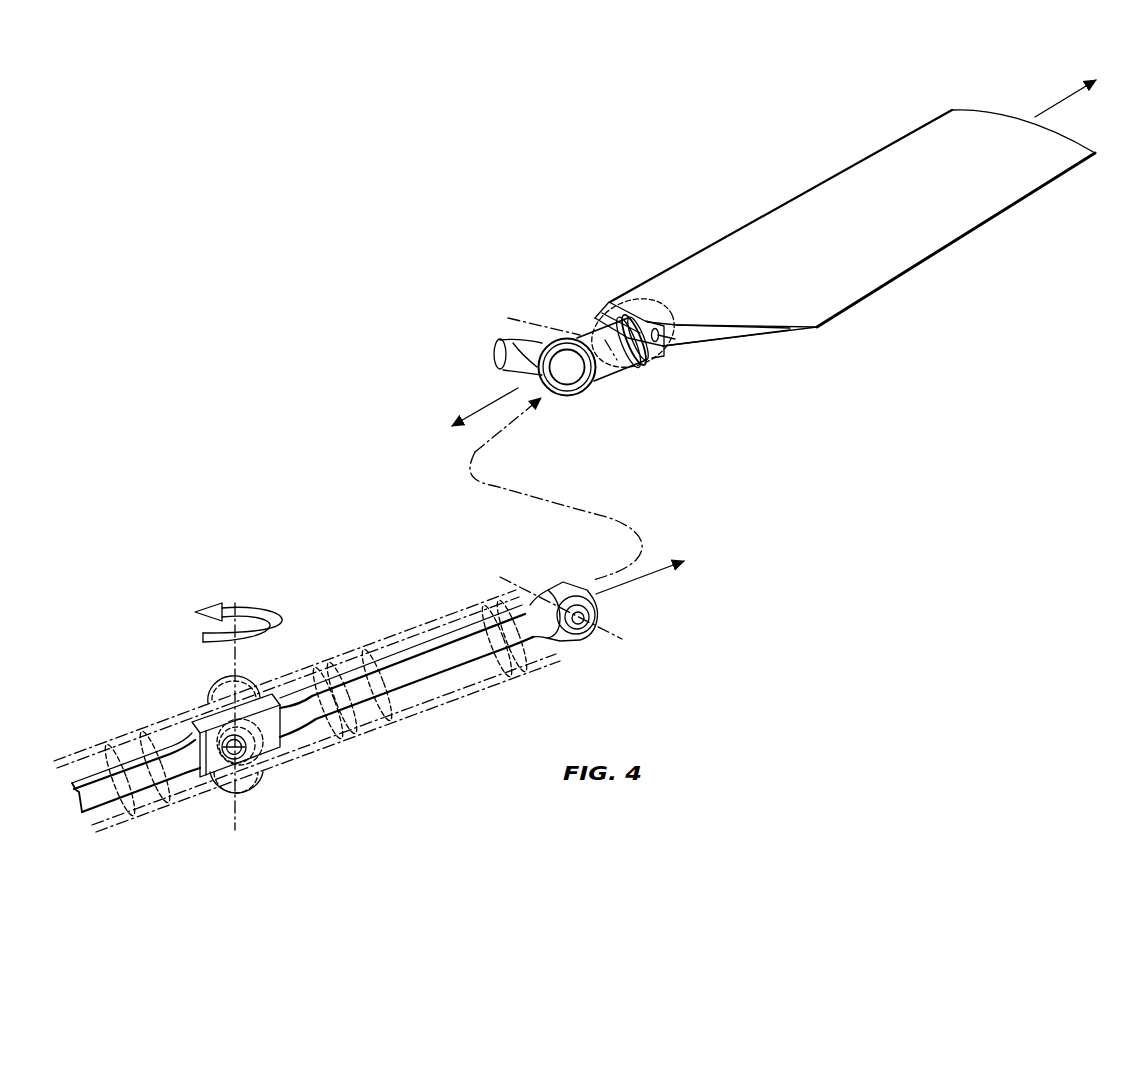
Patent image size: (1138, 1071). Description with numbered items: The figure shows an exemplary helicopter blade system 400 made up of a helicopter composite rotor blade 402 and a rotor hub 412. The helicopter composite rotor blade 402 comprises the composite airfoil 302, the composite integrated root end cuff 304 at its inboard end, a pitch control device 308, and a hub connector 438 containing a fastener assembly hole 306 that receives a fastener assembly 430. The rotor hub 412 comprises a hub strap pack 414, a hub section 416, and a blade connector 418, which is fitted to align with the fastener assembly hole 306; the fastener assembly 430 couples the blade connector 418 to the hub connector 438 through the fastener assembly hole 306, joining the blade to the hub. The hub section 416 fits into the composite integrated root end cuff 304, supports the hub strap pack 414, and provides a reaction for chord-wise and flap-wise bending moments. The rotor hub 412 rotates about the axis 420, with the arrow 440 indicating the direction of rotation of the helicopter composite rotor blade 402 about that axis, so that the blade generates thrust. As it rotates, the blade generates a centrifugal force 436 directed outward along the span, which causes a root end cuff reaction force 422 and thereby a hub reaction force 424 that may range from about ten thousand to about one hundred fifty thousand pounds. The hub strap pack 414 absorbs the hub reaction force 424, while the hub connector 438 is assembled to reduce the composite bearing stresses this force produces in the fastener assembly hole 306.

The helicopter blade system 400 is at (208, 245).
The helicopter composite rotor blade 402 is at (816, 142).
The composite airfoil 302 is at (763, 223).
The composite integrated root end cuff 304 is at (608, 374).
The fastener assembly hole 306 is at (666, 347).
The pitch control device 308 is at (516, 337).
The hub connector 438 is at (598, 308).
The fastener assembly 430 is at (716, 343).
The root end cuff reaction force 422 is at (471, 413).
The centrifugal force 436 is at (1068, 97).
The rotor hub 412 is at (699, 648).
The hub strap pack 414 is at (430, 638).
The hub section 416 is at (441, 693).
The blade connector 418 is at (590, 620).
The axis 420 is at (230, 657).
The hub reaction force 424 is at (674, 566).
The arrow 440 is at (256, 612).